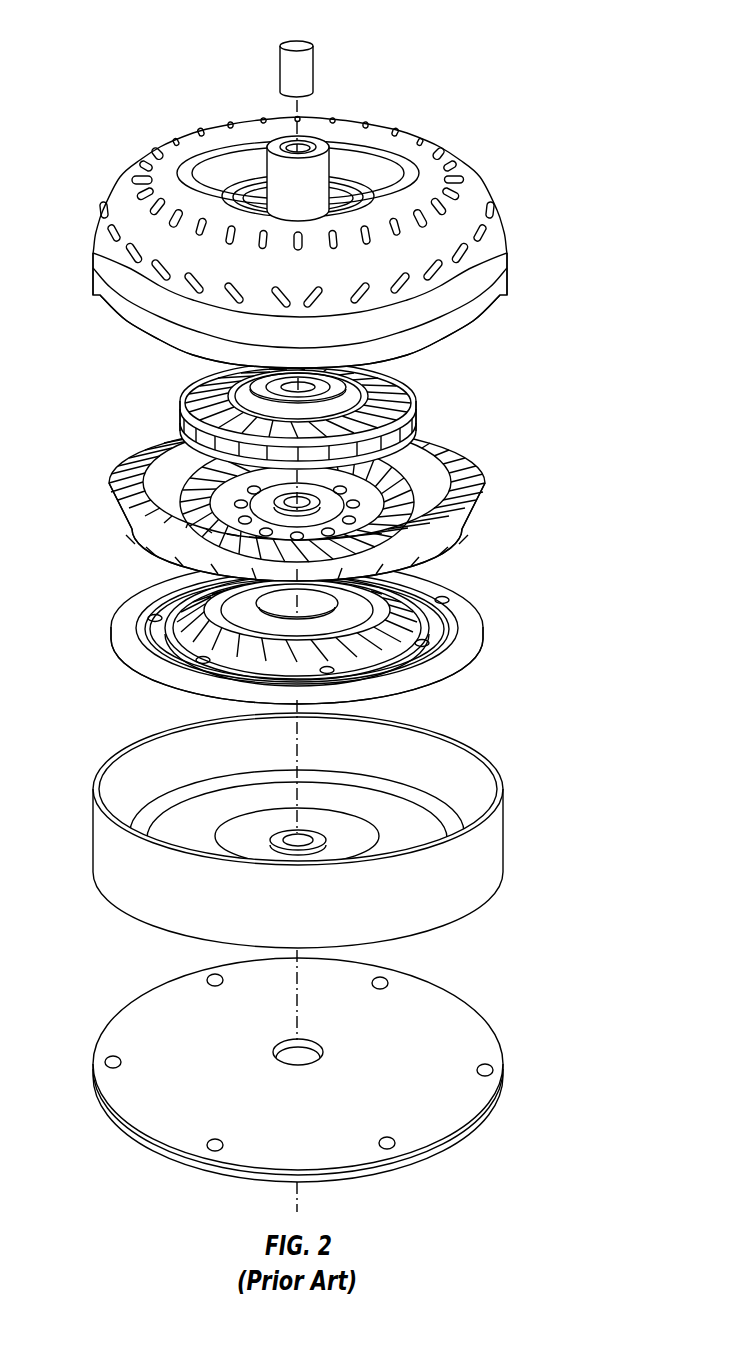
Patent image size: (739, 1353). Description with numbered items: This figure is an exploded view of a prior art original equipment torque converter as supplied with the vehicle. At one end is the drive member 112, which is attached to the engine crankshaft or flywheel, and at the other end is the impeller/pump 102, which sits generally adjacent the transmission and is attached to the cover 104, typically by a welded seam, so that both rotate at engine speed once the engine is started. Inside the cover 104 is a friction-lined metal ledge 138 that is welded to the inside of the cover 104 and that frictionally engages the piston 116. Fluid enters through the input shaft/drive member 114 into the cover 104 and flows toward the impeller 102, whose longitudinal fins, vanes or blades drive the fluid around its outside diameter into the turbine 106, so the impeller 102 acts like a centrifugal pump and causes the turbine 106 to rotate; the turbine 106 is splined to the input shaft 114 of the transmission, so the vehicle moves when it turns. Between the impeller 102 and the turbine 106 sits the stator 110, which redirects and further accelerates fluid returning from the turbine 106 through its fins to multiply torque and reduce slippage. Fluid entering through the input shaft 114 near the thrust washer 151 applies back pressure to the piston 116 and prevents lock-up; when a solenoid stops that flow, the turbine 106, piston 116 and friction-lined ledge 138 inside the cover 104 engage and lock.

The impeller/pump 102 is at (473, 205).
The cover 104 is at (332, 827).
The turbine 106 is at (435, 558).
The stator 110 is at (413, 417).
The drive member 112 is at (460, 1017).
The input shaft/drive member 114 is at (310, 75).
The piston 116 is at (475, 618).
The ledge 138 is at (450, 818).
The thrust washer 151 is at (313, 845).